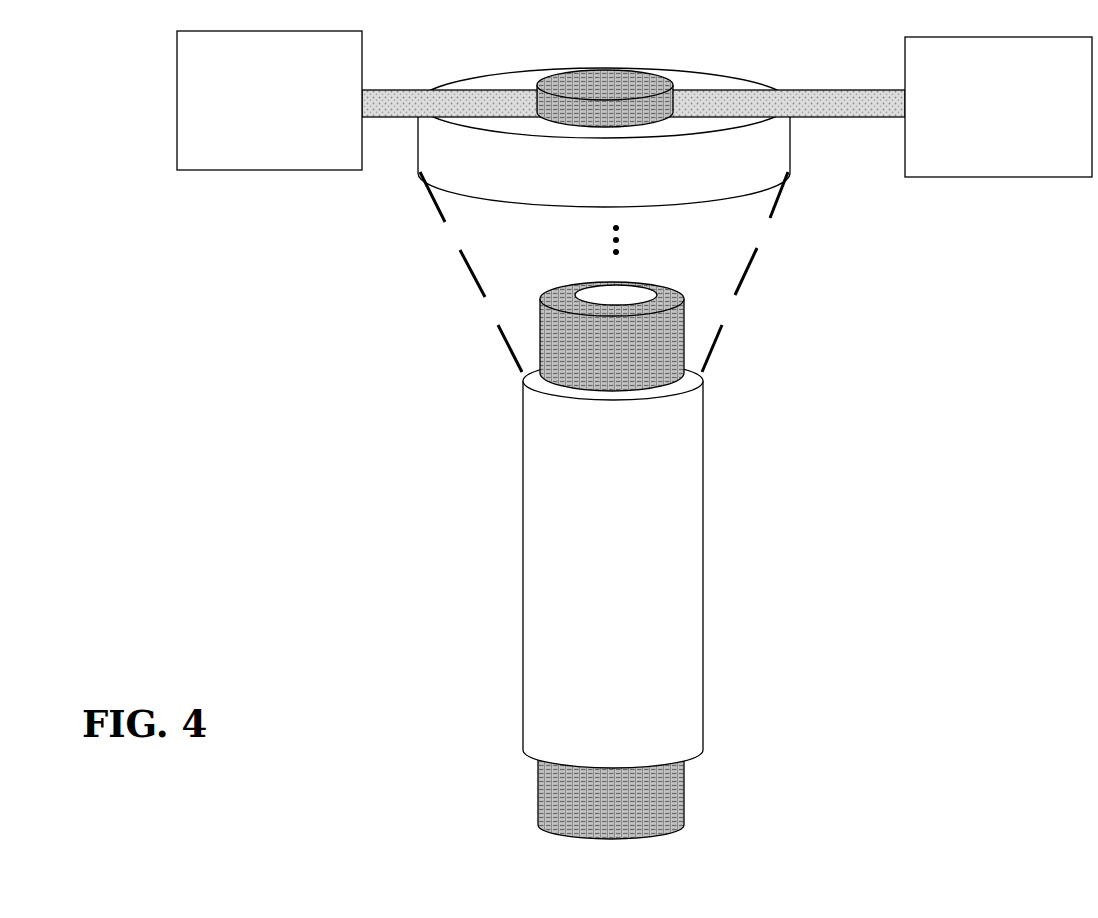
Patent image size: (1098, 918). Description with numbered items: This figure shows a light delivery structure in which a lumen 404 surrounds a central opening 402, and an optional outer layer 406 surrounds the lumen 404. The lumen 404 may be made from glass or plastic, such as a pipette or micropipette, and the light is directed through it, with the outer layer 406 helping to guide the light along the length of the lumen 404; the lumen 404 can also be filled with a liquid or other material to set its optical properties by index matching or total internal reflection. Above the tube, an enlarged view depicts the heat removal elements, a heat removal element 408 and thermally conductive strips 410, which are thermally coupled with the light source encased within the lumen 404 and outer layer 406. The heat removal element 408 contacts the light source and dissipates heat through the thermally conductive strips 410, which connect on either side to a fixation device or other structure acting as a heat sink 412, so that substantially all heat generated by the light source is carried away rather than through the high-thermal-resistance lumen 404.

The opening 402 is at (617, 291).
The lumen 404 is at (683, 327).
The outer layer 406 is at (698, 423).
The heat removal element 408 is at (640, 80).
The thermally conductive strips 410 is at (392, 92).
The heat sink 412 is at (341, 40).